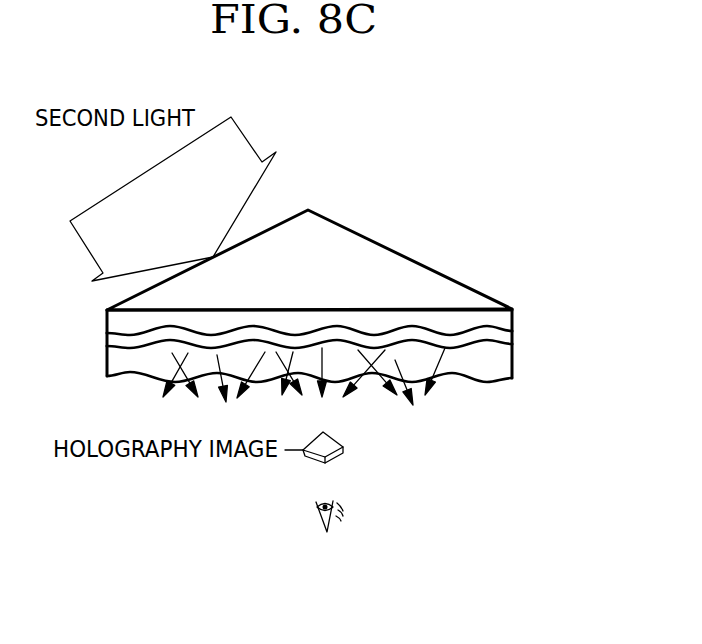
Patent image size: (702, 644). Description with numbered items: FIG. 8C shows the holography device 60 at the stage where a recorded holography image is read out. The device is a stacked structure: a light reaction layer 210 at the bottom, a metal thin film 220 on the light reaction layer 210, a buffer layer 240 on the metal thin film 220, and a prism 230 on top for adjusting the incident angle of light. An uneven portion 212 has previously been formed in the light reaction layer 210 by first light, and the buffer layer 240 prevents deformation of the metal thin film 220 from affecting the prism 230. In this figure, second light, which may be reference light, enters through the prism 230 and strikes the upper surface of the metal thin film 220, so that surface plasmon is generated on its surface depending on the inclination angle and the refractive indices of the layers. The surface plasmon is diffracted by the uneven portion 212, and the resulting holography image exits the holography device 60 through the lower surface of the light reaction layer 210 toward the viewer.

The holography device 60 is at (546, 165).
The light reaction layer 210 is at (507, 361).
The uneven portion 212 is at (450, 338).
The metal thin film 220 is at (504, 337).
The prism 230 is at (421, 274).
The buffer layer 240 is at (512, 313).